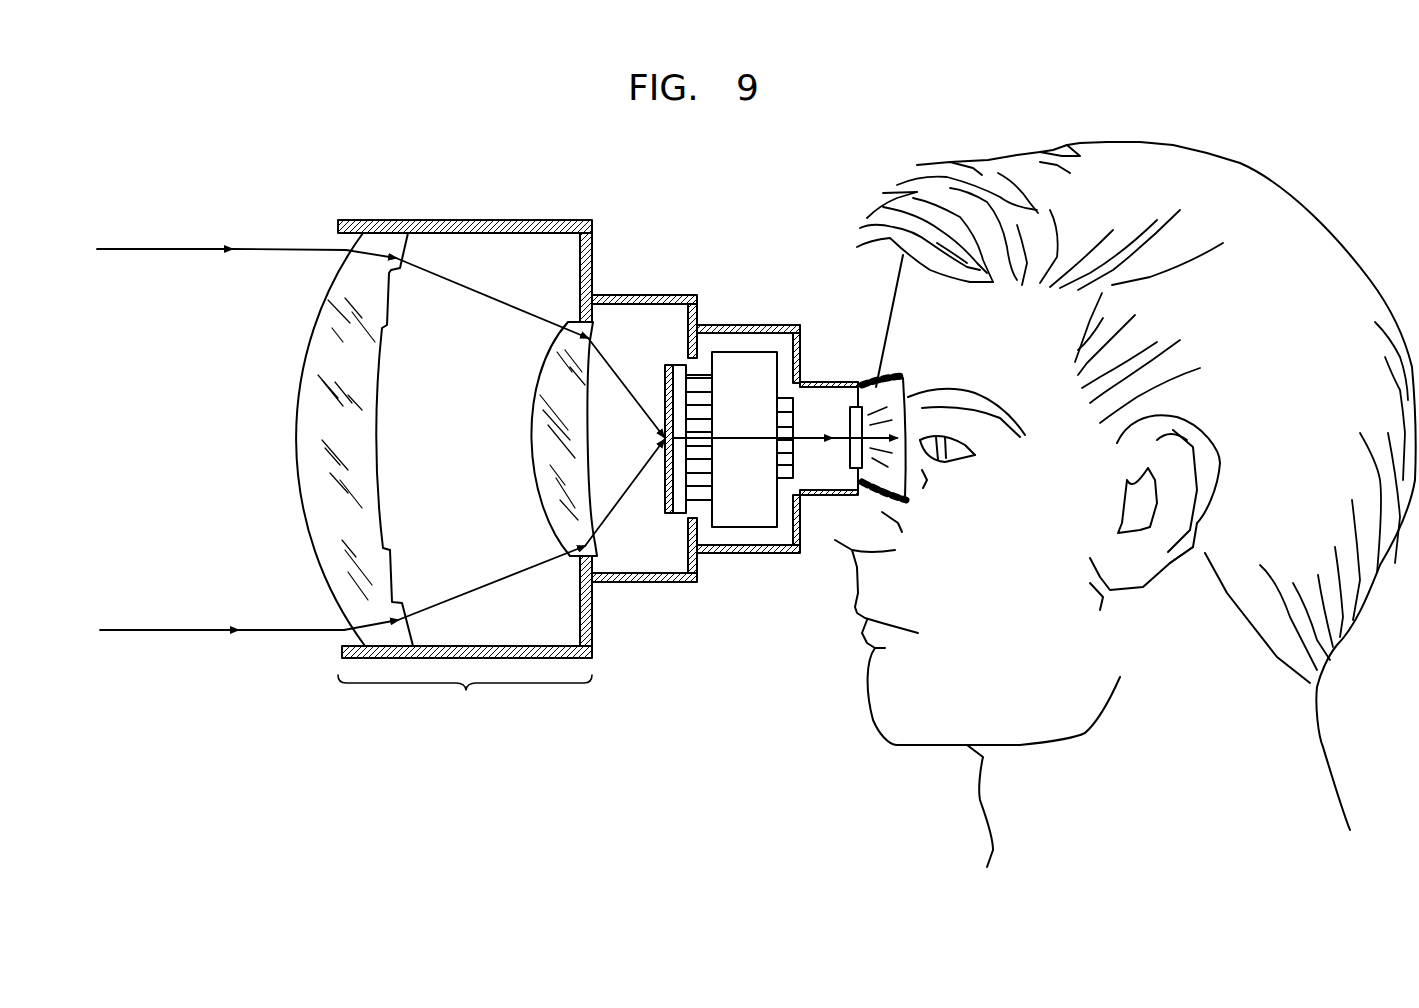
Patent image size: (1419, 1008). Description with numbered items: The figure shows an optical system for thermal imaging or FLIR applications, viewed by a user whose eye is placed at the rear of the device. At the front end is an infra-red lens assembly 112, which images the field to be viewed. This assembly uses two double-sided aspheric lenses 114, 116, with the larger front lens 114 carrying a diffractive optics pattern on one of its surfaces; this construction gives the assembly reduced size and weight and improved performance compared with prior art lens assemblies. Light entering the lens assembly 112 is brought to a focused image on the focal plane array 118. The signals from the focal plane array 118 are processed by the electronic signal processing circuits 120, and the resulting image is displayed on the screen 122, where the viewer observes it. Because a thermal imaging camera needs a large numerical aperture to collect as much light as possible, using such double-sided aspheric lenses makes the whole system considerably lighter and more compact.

The infra-red lens assembly 112 is at (465, 473).
The double-sided aspheric lens 114 is at (325, 525).
The double-sided aspheric lens 116 is at (543, 443).
The focal plane array 118 is at (662, 498).
The electronic signal processing circuits 120 is at (735, 512).
The screen 122 is at (858, 428).